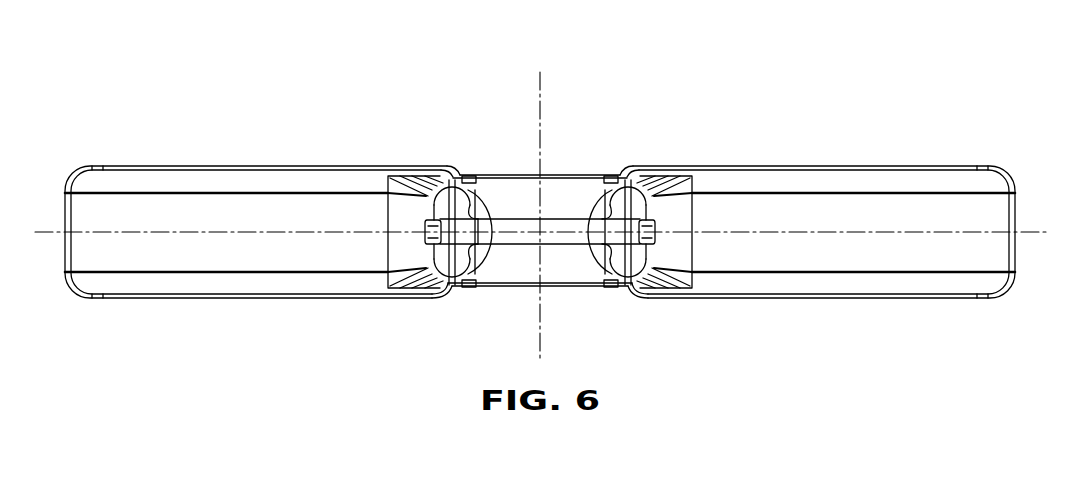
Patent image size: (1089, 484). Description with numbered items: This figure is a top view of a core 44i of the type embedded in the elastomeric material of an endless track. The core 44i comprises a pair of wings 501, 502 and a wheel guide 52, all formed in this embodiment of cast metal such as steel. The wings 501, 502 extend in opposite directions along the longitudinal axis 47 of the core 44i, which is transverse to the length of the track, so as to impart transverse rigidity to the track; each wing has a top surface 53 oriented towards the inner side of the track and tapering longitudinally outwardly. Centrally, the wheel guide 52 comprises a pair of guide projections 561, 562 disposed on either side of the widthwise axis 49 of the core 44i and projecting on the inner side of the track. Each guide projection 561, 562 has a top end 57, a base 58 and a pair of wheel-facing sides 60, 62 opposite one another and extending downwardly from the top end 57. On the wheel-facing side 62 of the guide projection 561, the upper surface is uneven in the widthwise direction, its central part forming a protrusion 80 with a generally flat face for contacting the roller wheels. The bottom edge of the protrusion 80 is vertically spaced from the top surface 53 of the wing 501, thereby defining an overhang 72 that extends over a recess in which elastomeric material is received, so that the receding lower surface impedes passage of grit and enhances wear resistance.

The core 44i is at (208, 79).
The longitudinal axis 47 is at (1035, 231).
The widthwise axis 49 is at (540, 87).
The wing 501 is at (262, 234).
The wing 502 is at (912, 212).
The wheel guide 52 is at (688, 304).
The top surface 53 is at (128, 255).
The guide projection 561 is at (421, 219).
The guide projection 562 is at (640, 181).
The top end 57 is at (641, 218).
The base 58 is at (653, 285).
The wheel-facing side 60 is at (478, 213).
The wheel-facing side 62 is at (414, 216).
The overhang 72 is at (430, 233).
The protrusion 80 is at (428, 241).